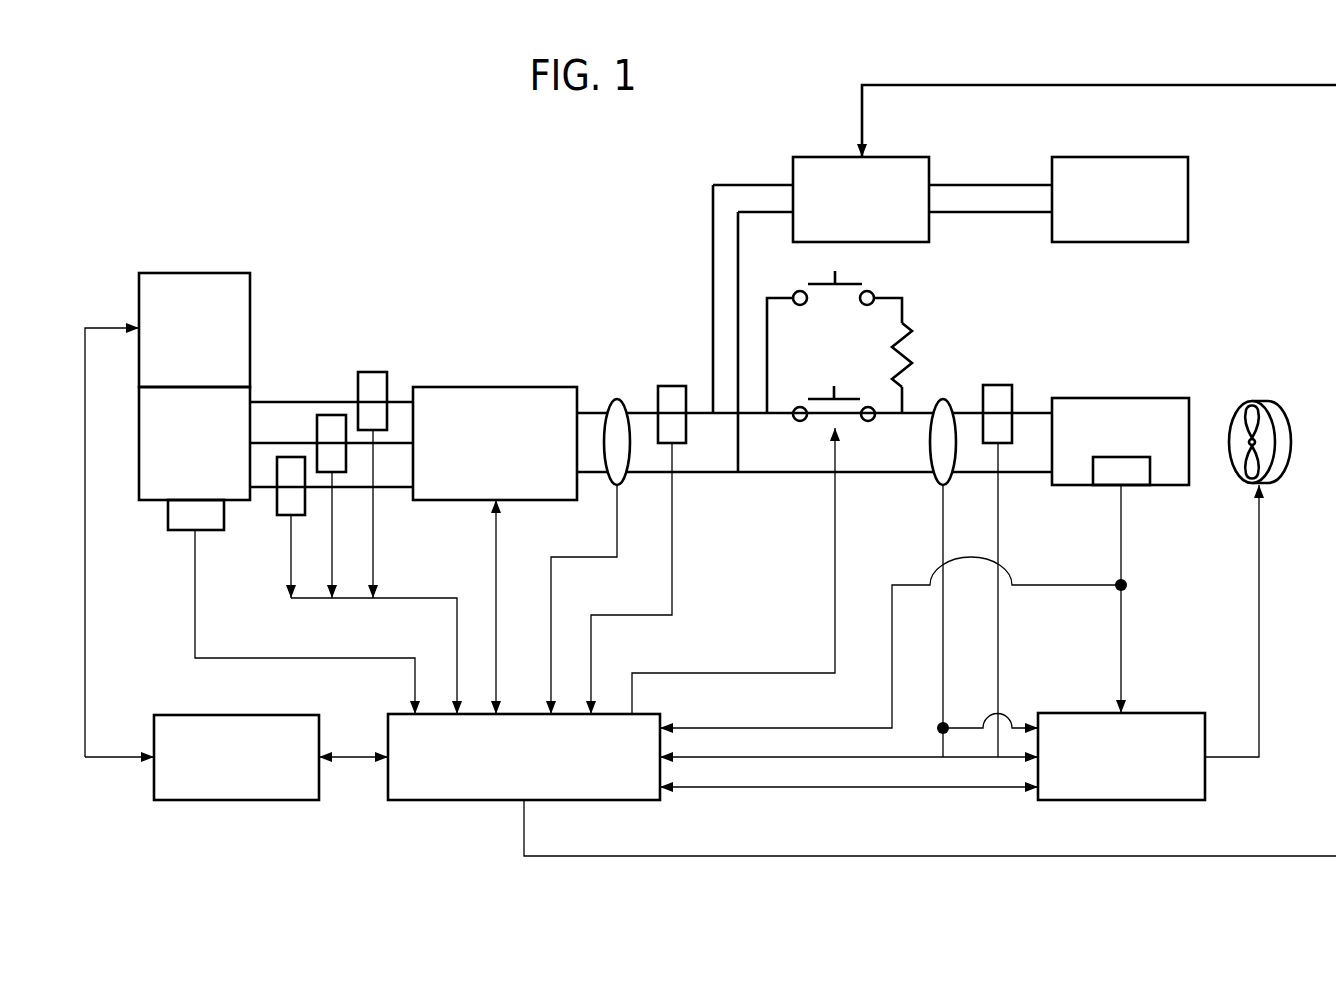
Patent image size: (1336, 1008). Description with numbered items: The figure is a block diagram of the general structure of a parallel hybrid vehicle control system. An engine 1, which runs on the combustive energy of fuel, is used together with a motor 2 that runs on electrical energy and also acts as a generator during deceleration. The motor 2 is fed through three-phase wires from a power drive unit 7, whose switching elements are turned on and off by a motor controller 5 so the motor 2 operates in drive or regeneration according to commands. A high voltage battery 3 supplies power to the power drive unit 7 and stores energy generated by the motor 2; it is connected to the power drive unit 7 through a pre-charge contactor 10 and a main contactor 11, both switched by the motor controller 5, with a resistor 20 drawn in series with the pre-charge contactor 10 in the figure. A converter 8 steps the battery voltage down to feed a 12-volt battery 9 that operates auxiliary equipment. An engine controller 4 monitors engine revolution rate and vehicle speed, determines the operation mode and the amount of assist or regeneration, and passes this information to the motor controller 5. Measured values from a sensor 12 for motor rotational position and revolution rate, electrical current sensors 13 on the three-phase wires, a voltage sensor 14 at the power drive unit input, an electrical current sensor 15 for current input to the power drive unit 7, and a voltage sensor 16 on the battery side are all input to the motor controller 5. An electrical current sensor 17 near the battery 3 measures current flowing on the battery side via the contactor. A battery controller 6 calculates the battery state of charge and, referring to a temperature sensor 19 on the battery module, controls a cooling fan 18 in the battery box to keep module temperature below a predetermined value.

The engine 1 is at (203, 272).
The motor 2 is at (140, 492).
The battery 3 is at (1138, 398).
The engine controller 4 is at (223, 714).
The motor controller 5 is at (618, 800).
The battery controller 6 is at (1120, 800).
The power drive unit 7 is at (468, 387).
The converter 8 is at (822, 157).
The 12-volt battery 9 is at (1107, 157).
The pre-charge contactor 10 is at (820, 284).
The main contactor 11 is at (822, 398).
The sensor 12 is at (207, 531).
The electrical current sensor 13 is at (290, 457).
The voltage sensor 14 is at (613, 400).
The electrical current sensor 15 is at (668, 386).
The voltage sensor 16 is at (942, 400).
The electrical current sensor 17 is at (998, 386).
The cooling fan 18 is at (1253, 485).
The temperature sensor 19 is at (1107, 486).
The precharge resistor 20 is at (915, 343).